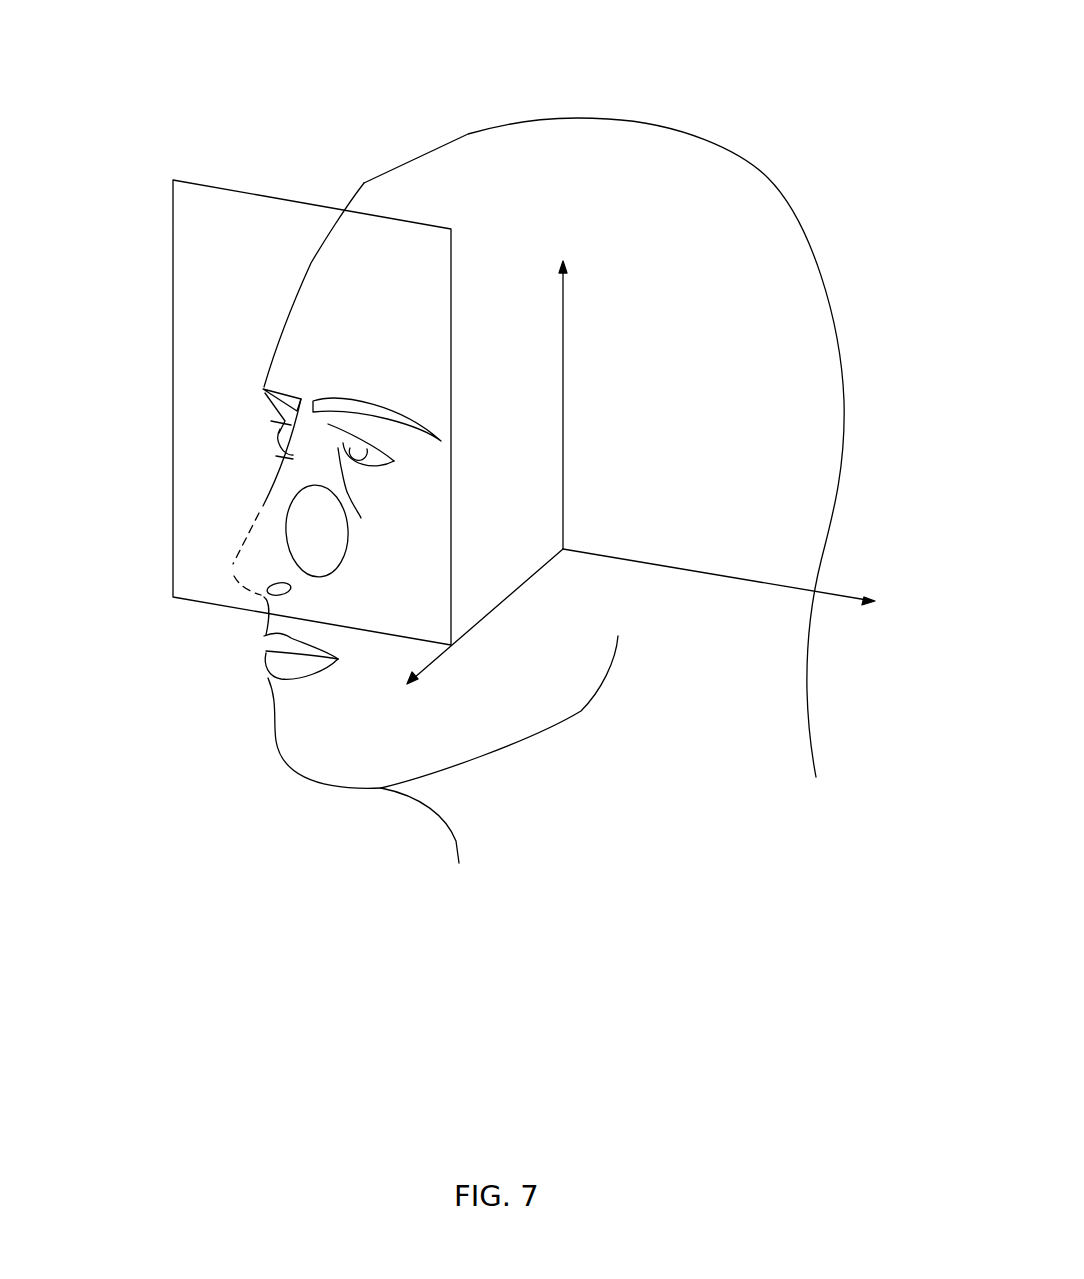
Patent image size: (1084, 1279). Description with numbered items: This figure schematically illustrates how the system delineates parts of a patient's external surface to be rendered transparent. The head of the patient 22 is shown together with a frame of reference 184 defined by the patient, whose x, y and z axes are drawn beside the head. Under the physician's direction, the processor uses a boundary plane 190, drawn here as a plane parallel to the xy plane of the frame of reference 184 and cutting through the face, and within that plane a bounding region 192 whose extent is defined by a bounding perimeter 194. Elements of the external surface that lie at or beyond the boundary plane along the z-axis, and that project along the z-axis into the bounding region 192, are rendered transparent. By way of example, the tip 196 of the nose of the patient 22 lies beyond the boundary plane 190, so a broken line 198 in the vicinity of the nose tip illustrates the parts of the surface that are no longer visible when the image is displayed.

The patient 22 is at (612, 118).
The boundary plane 190 is at (245, 195).
The frame of reference 184 is at (563, 401).
The bounding region 192 is at (309, 498).
The bounding perimeter 194 is at (347, 546).
The tip of the nose 196 is at (230, 562).
The broken line 198 is at (242, 534).